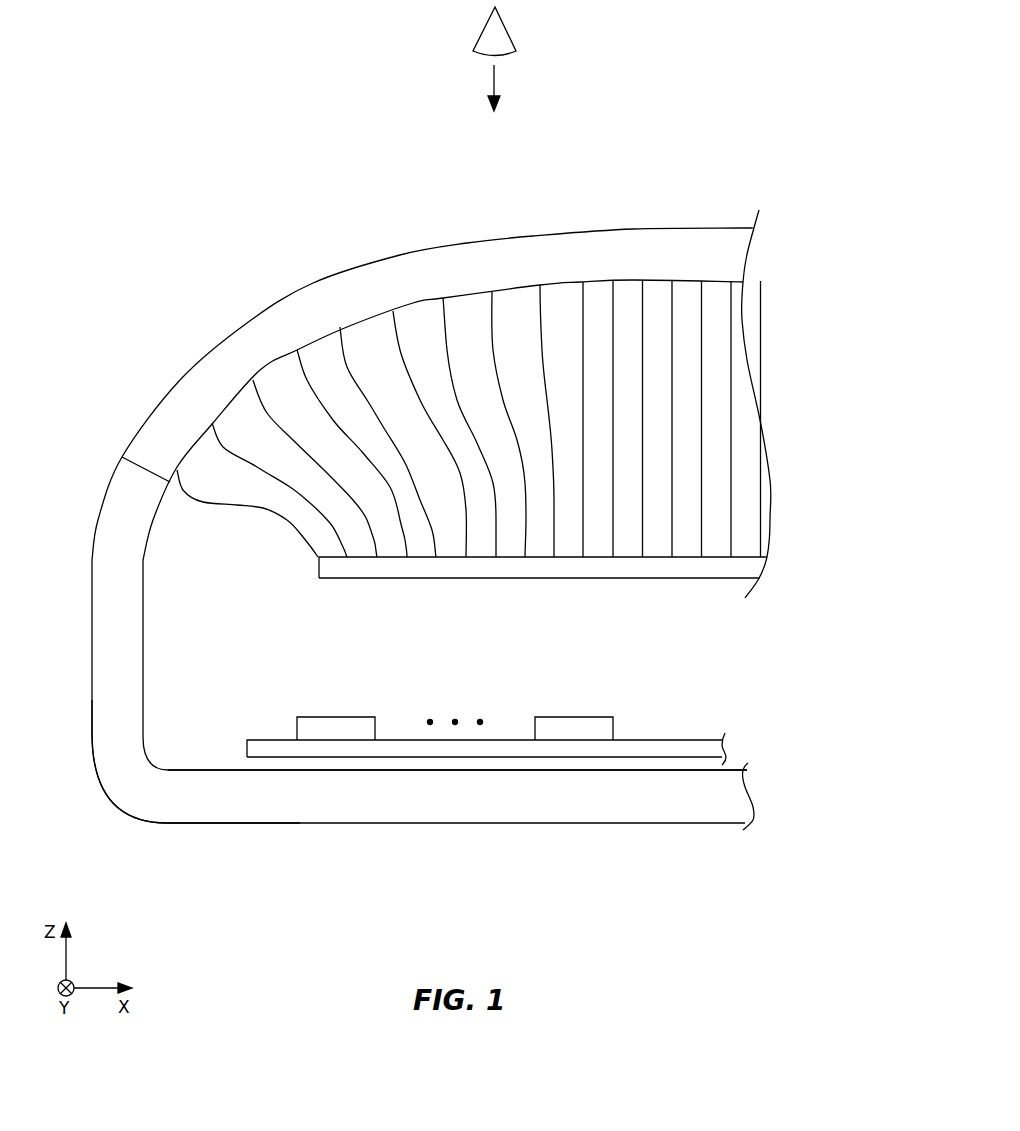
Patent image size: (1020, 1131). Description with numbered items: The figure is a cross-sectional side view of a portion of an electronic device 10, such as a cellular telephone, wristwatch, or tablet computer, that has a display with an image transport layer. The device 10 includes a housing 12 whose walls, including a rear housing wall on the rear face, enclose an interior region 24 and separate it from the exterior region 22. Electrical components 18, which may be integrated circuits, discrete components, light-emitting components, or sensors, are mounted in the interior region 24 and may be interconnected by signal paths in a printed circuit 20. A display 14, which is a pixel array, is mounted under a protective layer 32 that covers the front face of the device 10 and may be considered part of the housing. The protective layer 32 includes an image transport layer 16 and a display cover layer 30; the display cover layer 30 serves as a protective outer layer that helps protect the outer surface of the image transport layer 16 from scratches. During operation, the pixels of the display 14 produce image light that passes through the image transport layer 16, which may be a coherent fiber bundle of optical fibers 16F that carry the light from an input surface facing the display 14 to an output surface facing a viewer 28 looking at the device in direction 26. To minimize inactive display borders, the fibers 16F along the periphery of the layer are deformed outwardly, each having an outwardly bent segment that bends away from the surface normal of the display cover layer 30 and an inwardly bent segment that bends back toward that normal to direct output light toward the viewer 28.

The electronic device 10 is at (687, 137).
The housing 12 is at (580, 808).
The display 14 is at (713, 567).
The image transport layer 16 is at (508, 431).
The optical fibers 16F is at (293, 463).
The electrical components 18 is at (336, 728).
The printed circuit 20 is at (267, 737).
The exterior region 22 is at (233, 212).
The interior region 24 is at (195, 750).
The direction 26 is at (497, 83).
The viewer 28 is at (510, 28).
The display cover layer 30 is at (358, 280).
The protective layer 32 is at (862, 225).